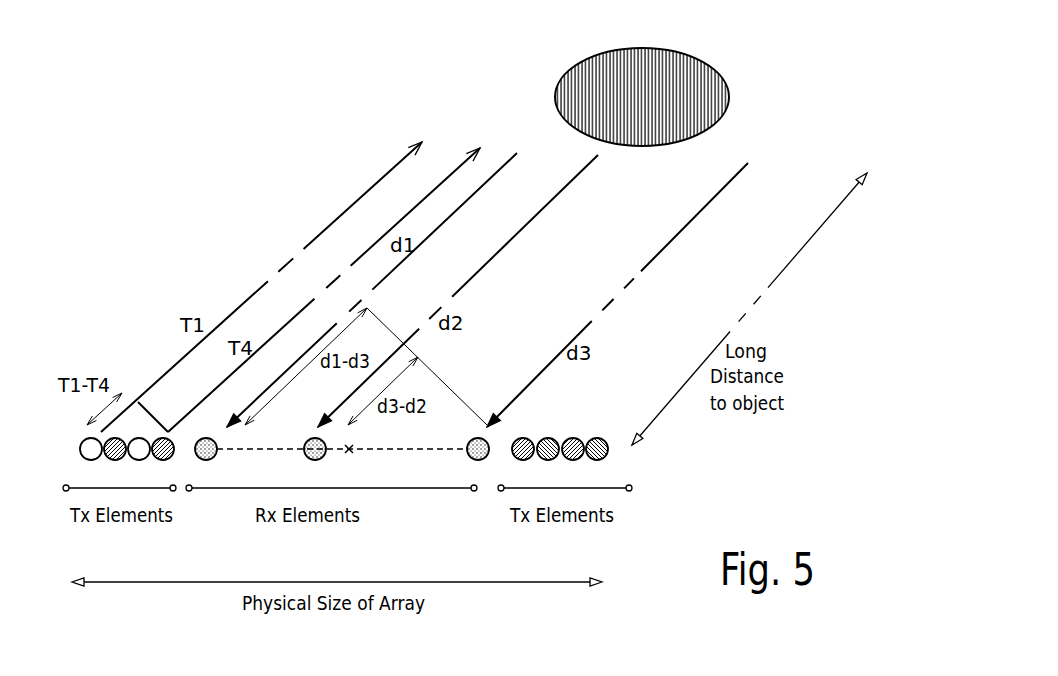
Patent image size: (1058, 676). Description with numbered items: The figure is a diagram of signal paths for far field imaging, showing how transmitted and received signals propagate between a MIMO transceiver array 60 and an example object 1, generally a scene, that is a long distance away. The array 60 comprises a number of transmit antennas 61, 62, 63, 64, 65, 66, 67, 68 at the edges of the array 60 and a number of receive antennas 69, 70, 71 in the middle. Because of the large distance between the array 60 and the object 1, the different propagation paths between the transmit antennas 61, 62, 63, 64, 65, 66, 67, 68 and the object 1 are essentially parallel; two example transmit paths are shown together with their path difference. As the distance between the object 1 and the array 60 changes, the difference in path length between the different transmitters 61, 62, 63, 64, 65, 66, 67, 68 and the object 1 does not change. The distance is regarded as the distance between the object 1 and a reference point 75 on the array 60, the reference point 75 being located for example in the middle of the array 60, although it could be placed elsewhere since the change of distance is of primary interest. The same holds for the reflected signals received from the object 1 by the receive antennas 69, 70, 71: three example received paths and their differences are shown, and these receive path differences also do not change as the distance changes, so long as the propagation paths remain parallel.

The object 1 is at (707, 63).
The transceiver array 60 is at (690, 452).
The transmit antenna 61 is at (83, 438).
The transmit antenna 62 is at (111, 459).
The transmit antenna 63 is at (138, 459).
The transmit antenna 64 is at (172, 459).
The transmit antenna 65 is at (526, 438).
The transmit antenna 66 is at (550, 438).
The transmit antenna 67 is at (575, 438).
The transmit antenna 68 is at (601, 438).
The receive antenna 69 is at (214, 459).
The receive antenna 70 is at (307, 440).
The receive antenna 71 is at (469, 440).
The reference point 75 is at (350, 452).